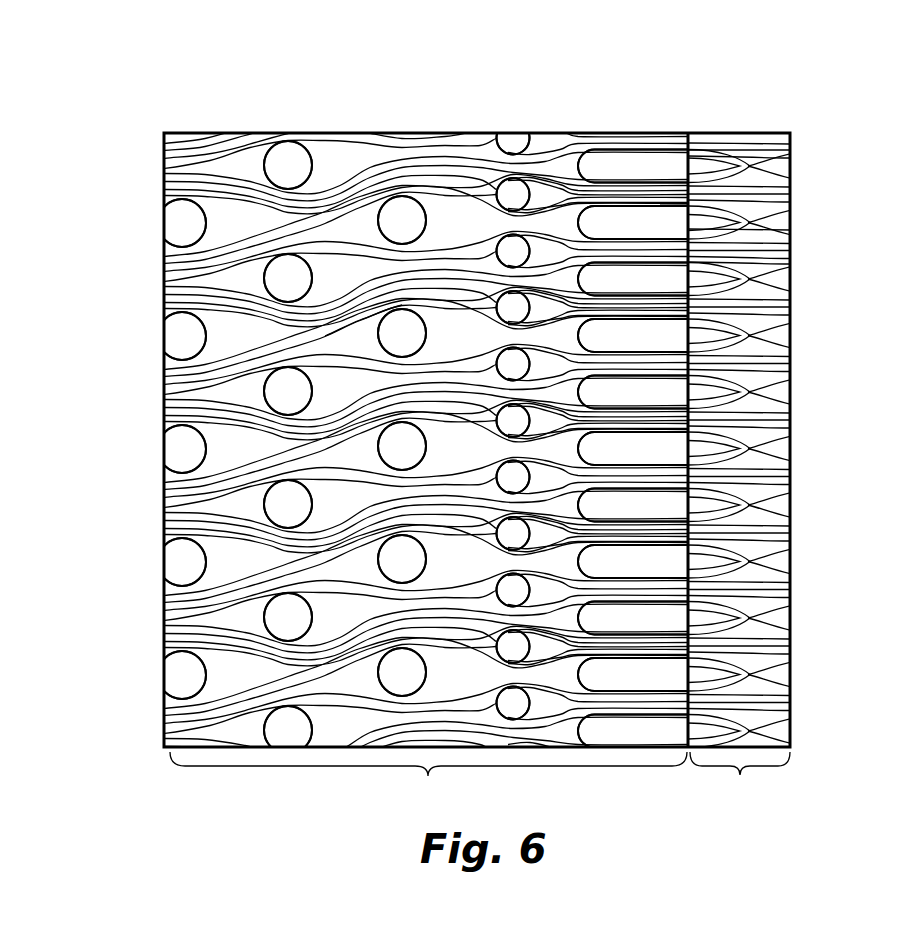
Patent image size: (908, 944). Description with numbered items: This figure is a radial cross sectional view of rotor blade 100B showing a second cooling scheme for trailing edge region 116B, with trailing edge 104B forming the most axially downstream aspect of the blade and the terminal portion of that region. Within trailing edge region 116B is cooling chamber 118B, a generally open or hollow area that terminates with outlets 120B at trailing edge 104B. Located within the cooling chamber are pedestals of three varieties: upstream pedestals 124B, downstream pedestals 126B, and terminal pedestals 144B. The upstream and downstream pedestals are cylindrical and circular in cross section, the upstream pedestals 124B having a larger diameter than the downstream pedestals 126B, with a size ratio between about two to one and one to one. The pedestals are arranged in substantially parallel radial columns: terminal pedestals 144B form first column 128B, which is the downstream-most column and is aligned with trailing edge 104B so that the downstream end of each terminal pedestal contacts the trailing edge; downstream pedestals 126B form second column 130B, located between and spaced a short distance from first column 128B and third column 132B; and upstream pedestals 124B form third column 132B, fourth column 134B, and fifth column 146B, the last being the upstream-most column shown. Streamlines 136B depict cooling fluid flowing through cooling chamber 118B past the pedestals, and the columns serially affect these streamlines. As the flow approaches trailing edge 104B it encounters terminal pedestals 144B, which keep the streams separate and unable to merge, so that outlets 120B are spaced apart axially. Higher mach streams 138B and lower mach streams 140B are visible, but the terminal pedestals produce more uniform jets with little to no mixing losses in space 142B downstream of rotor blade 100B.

The rotor blade 100B is at (838, 126).
The trailing edge 104B is at (688, 752).
The trailing edge region 116B is at (428, 776).
The cooling chamber 118B is at (231, 158).
The outlets 120B is at (684, 192).
The upstream pedestals 124B is at (178, 678).
The downstream pedestals 126B is at (510, 591).
The first column 128B is at (624, 122).
The second column 130B is at (513, 122).
The third column 132B is at (400, 122).
The fourth column 134B is at (288, 122).
The streamlines 136B is at (266, 340).
The higher mach streams 138B is at (739, 251).
The lower mach streams 140B is at (739, 221).
The space downstream of rotor blade 142B is at (739, 470).
The terminal pedestals 144B is at (663, 571).
The fifth column 146B is at (180, 122).